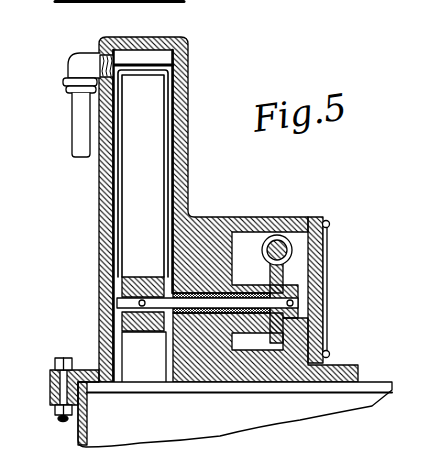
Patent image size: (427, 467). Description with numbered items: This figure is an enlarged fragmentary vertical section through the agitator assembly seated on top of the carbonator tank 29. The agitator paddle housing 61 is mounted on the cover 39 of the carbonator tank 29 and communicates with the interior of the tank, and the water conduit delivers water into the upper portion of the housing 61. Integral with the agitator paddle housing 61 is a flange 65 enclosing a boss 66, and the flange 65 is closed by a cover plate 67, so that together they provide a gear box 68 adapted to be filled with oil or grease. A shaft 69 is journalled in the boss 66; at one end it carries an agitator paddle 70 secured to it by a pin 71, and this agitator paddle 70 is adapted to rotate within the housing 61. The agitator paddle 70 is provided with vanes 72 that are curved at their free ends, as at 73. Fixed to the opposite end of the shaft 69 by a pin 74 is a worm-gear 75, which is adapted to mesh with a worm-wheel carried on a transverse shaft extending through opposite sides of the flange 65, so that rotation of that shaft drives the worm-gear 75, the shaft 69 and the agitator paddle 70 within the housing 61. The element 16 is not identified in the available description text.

The cover plate 16 is at (305, 218).
The carbonator tank 29 is at (73, 428).
The cover 39 is at (50, 388).
The agitator paddle housing 61 is at (187, 38).
The flange 65 is at (280, 236).
The boss 66 is at (246, 282).
The cover plate 67 is at (318, 250).
The gear box 68 is at (298, 272).
The shaft 69 is at (130, 308).
The agitator paddle 70 is at (113, 197).
The pin 71 is at (112, 316).
The vanes 72 is at (128, 163).
The curved free ends 73 is at (150, 98).
The pin 74 is at (300, 302).
The worm-gear 75 is at (290, 332).